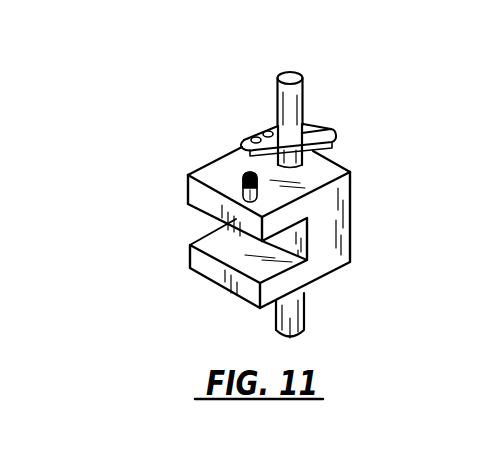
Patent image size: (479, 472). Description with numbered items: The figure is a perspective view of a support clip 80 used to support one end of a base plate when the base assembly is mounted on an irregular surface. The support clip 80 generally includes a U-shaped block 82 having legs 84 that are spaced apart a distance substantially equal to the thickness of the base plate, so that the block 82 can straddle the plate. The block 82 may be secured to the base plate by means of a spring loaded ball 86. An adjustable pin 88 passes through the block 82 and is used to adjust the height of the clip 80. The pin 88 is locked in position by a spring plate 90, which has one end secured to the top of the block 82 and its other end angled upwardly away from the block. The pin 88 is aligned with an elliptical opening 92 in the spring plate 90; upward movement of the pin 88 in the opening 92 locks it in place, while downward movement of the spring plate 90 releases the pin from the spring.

The support clip 80 is at (357, 154).
The U-shaped block 82 is at (352, 212).
The legs 84 is at (207, 212).
The spring loaded ball 86 is at (243, 171).
The adjustable pin 88 is at (300, 70).
The spring plate 90 is at (320, 128).
The elliptical opening 92 is at (288, 122).